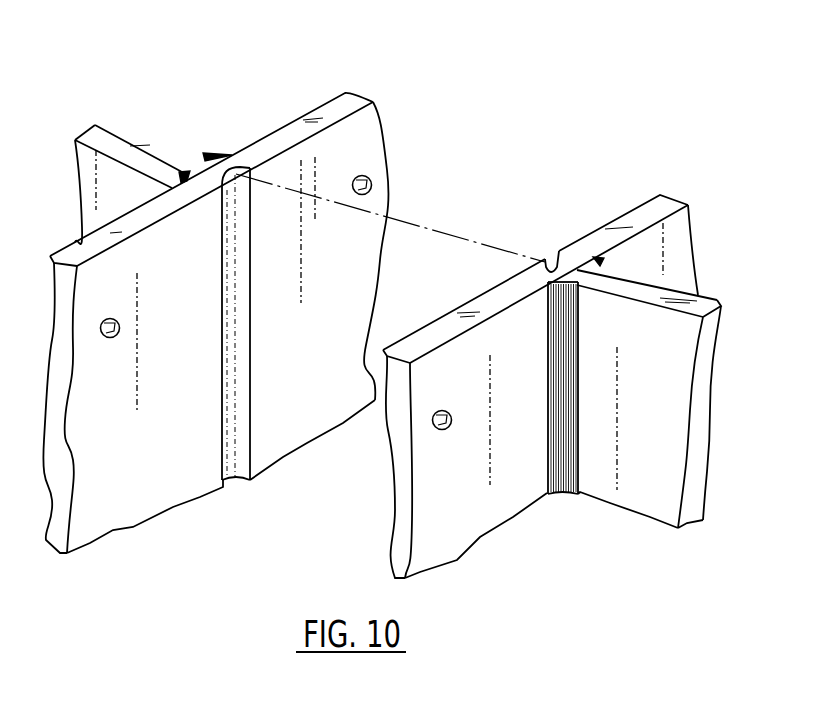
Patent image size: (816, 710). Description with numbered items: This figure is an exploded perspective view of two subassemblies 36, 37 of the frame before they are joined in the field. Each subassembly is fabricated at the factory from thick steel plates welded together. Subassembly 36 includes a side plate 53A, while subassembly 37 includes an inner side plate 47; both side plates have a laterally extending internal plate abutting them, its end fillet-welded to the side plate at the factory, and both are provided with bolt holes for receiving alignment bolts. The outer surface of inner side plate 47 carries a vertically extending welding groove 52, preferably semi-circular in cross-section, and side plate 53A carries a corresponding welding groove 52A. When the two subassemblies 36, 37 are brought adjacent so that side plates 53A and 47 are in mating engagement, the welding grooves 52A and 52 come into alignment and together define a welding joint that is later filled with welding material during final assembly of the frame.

The subassembly 36 is at (243, 128).
The subassembly 37 is at (689, 258).
The inner side plate 47 is at (672, 230).
The welding groove 52 is at (538, 261).
The welding groove 52A is at (246, 341).
The side plate 53A is at (362, 132).